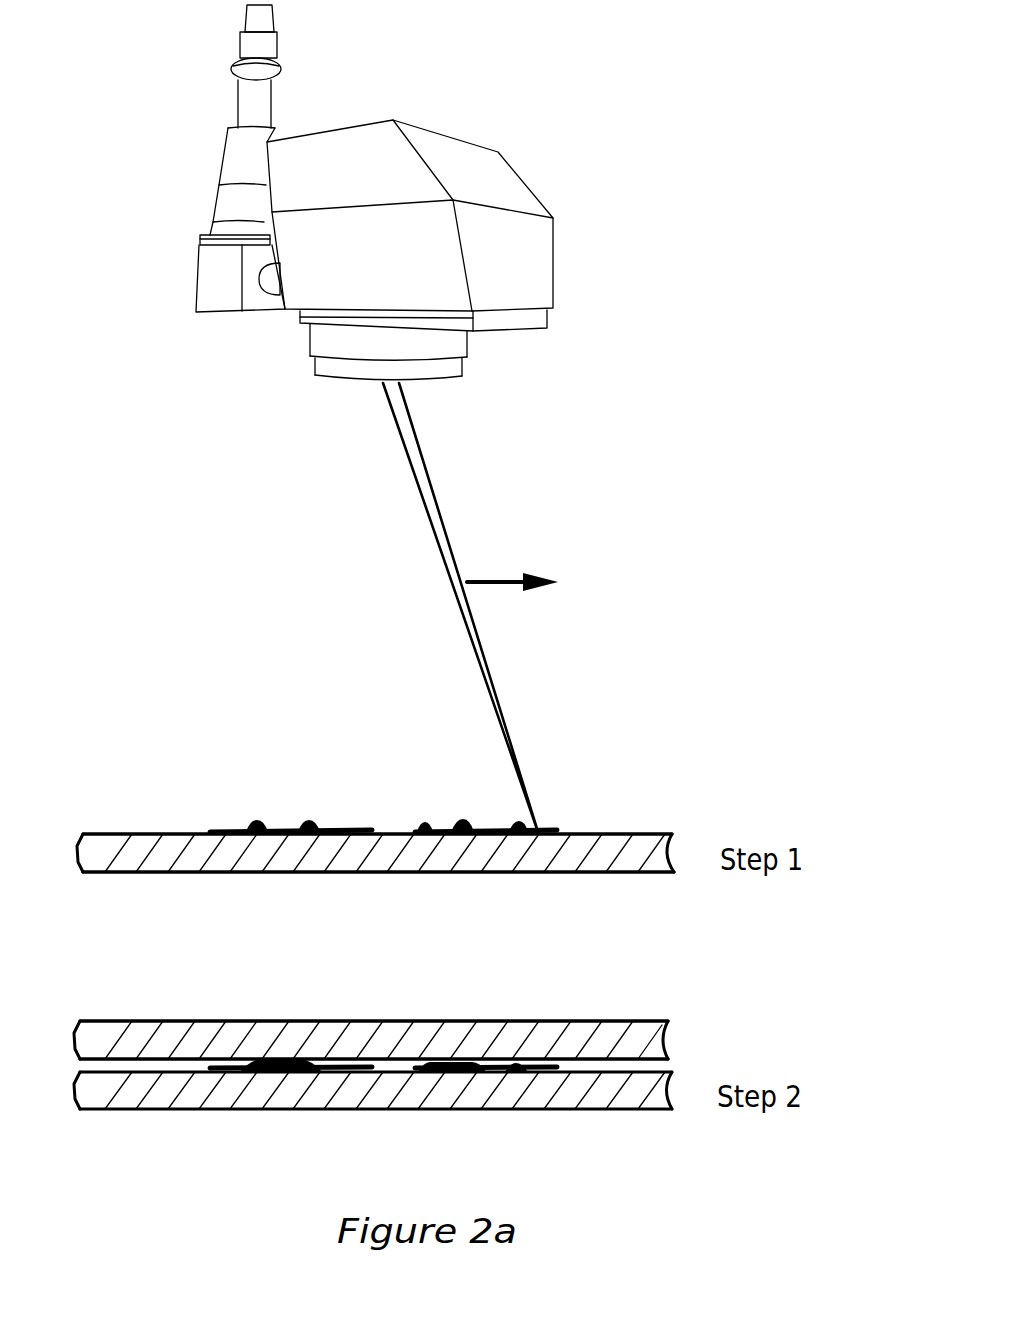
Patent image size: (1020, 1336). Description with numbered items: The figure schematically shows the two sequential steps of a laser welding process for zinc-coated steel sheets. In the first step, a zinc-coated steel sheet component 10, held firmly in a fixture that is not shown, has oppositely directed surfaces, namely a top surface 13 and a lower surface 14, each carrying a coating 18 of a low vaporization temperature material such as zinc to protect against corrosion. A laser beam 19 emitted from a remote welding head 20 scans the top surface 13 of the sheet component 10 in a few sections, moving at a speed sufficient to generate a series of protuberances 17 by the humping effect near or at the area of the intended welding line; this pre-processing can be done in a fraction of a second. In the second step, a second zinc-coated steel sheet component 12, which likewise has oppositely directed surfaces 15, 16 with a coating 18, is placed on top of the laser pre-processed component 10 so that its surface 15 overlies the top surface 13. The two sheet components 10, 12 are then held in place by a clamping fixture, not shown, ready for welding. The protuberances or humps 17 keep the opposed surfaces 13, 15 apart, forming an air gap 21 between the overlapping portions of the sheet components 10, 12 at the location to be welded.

The remote welding head 20 is at (470, 175).
The laser beam 19 is at (443, 513).
The component 10 is at (568, 855).
The top surface 13 is at (117, 832).
The surface 14 is at (153, 877).
The zinc coating 18 is at (163, 832).
The protuberances 17 is at (312, 813).
The component 12 is at (602, 1037).
The surface 16 is at (178, 1020).
The surface 15 is at (152, 1057).
The air gap 21 is at (647, 1063).